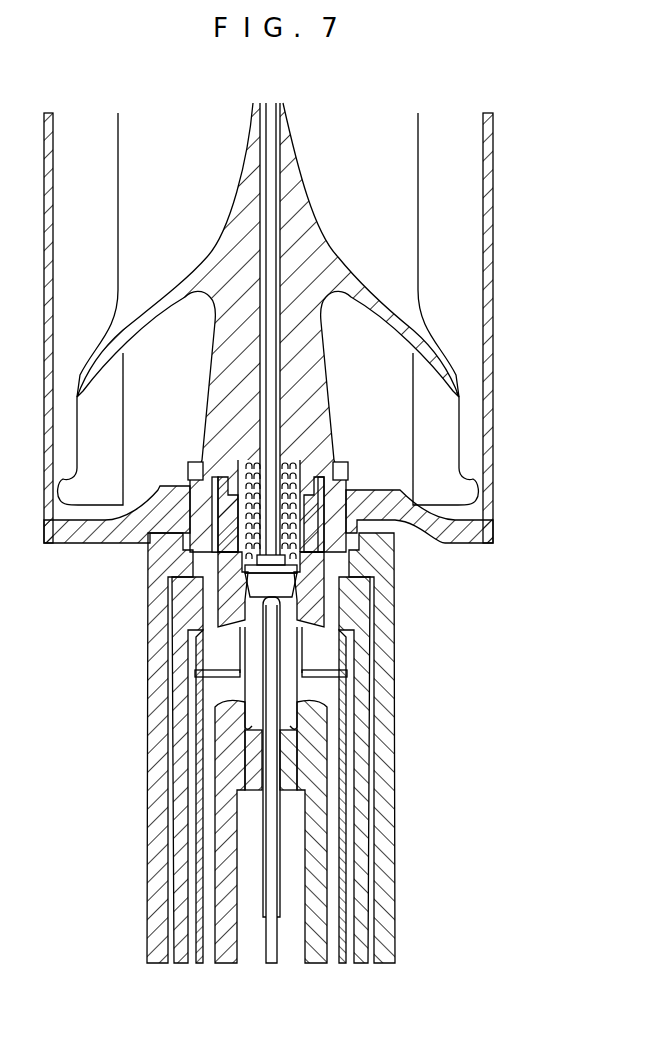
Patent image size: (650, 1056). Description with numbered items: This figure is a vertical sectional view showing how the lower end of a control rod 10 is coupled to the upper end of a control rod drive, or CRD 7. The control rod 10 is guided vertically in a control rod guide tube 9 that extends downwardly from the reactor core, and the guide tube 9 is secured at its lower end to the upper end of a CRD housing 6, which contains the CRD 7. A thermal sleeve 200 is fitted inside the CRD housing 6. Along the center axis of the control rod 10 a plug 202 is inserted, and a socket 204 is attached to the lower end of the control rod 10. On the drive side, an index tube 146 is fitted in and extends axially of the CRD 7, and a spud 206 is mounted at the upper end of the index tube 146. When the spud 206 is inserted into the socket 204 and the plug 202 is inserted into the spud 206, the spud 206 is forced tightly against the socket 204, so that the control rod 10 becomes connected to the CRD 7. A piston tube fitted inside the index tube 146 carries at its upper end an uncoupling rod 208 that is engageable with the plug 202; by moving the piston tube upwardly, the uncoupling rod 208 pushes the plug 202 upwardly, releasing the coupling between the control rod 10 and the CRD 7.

The CRD housing 6 is at (383, 852).
The CRD 7 is at (202, 886).
The control rod guide tube 9 is at (493, 226).
The control rod 10 is at (340, 258).
The index tube 146 is at (320, 805).
The thermal sleeve 200 is at (368, 738).
The plug 202 is at (232, 578).
The socket 204 is at (322, 608).
The spud 206 is at (238, 665).
The uncoupling rod 208 is at (275, 653).